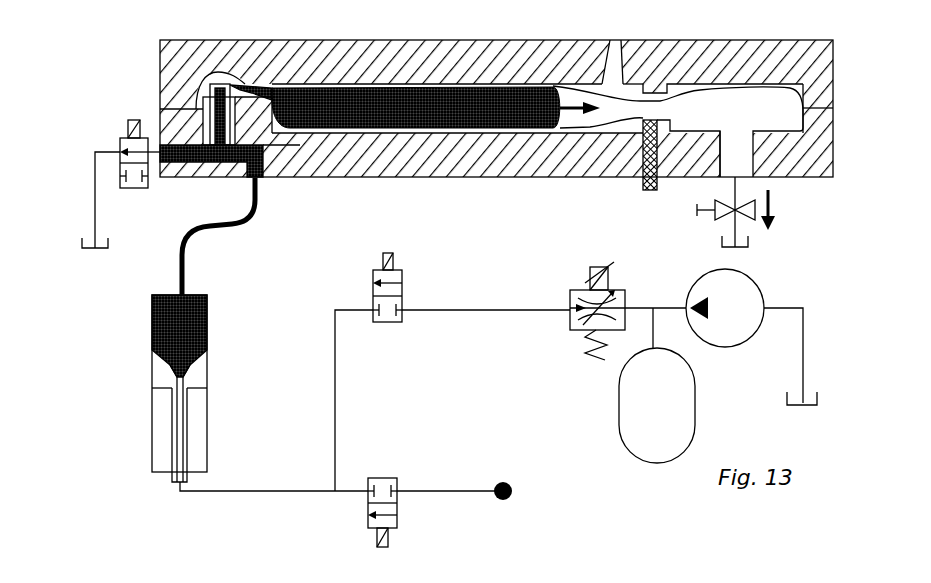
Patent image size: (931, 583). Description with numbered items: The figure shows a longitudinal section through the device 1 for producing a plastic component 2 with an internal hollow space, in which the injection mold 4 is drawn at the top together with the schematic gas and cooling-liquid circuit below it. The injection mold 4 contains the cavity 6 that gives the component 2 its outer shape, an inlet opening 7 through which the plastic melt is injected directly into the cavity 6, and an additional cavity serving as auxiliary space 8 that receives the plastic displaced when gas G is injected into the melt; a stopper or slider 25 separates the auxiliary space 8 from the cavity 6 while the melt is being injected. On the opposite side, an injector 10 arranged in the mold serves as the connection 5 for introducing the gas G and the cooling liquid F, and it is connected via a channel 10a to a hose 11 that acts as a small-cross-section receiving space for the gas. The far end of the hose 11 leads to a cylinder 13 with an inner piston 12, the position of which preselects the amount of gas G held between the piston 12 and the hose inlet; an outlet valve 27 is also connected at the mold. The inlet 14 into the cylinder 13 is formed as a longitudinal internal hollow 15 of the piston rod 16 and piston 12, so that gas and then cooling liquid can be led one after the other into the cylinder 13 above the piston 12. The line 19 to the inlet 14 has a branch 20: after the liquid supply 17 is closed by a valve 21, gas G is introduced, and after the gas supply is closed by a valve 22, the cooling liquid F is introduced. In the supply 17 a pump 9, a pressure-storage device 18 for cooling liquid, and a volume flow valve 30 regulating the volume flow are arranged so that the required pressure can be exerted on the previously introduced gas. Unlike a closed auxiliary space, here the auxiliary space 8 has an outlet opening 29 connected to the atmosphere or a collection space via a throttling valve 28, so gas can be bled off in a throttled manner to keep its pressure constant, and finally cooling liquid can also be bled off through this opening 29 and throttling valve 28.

The device 1 is at (123, 298).
The plastic component 2 is at (612, 118).
The injection mold 4 is at (405, 165).
The connection 5 is at (243, 85).
The cavity 6 is at (315, 140).
The inlet opening 7 is at (625, 45).
The auxiliary space 8 is at (795, 132).
The pump 9 is at (752, 290).
The injector 10 is at (210, 86).
The channel 10a is at (222, 168).
The hose 11 is at (218, 222).
The piston 12 is at (195, 382).
The cylinder 13 is at (208, 406).
The inlet 14 is at (172, 486).
The longitudinal internal hollow 15 is at (183, 378).
The piston rod 16 is at (186, 447).
The supply 17 is at (473, 312).
The pressure-storage device 18 is at (628, 410).
The line 19 is at (260, 492).
The branch 20 is at (334, 493).
The valve 21 is at (404, 292).
The valve 22 is at (399, 507).
The slider 25 is at (648, 187).
The outlet valve 27 is at (132, 188).
The throttling valve 28 is at (718, 207).
The outlet opening 29 is at (727, 165).
The volume flow valve 30 is at (585, 332).
The cooling liquid F is at (372, 138).
The gas G is at (560, 117).